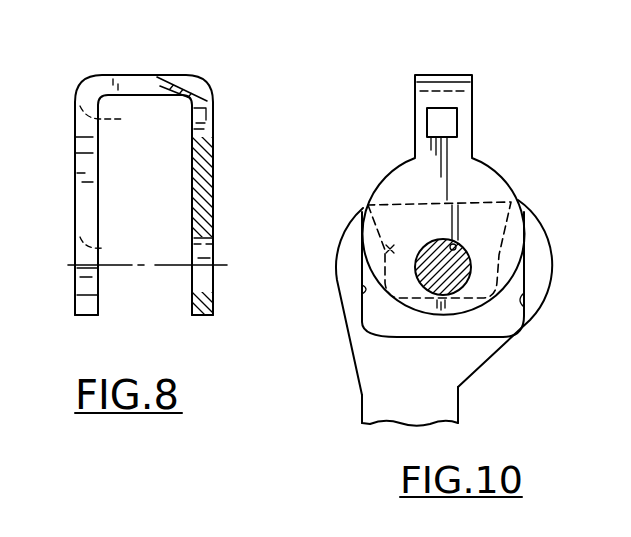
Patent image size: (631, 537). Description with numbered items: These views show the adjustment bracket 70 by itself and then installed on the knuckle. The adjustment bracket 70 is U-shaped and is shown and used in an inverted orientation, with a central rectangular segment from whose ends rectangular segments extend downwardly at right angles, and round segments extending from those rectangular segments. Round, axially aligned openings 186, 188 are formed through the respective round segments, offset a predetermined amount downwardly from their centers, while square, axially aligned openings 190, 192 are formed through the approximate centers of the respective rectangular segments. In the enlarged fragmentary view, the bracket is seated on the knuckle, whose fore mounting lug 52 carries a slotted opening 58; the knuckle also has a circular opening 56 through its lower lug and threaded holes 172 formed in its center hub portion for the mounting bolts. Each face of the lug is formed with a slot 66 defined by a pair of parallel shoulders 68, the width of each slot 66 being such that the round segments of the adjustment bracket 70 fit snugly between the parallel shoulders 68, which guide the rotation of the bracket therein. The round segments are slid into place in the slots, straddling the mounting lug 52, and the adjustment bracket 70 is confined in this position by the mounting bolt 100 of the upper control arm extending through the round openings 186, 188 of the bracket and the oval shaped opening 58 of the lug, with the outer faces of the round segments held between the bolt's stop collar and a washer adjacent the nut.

In FIG. 8, the circular opening 56 is at (175, 268).
In FIG. 8, the adjustment bracket 70 is at (208, 80).
In FIG. 10, the adjustment bracket 70 is at (480, 73).
In FIG. 8, the threaded holes 172 is at (125, 75).
In FIG. 8, the round opening 186 is at (110, 243).
In FIG. 10, the round opening 186 is at (462, 250).
In FIG. 8, the round opening 188 is at (217, 243).
In FIG. 8, the square opening 190 is at (121, 119).
In FIG. 10, the square opening 190 is at (456, 123).
In FIG. 8, the square opening 192 is at (213, 116).
In FIG. 10, the fore mounting lug 52 is at (541, 244).
In FIG. 10, the slotted opening 58 is at (365, 193).
In FIG. 10, the slot 66 is at (500, 325).
In FIG. 10, the parallel shoulders 68 is at (364, 293).
In FIG. 10, the mounting bolt 100 is at (465, 258).